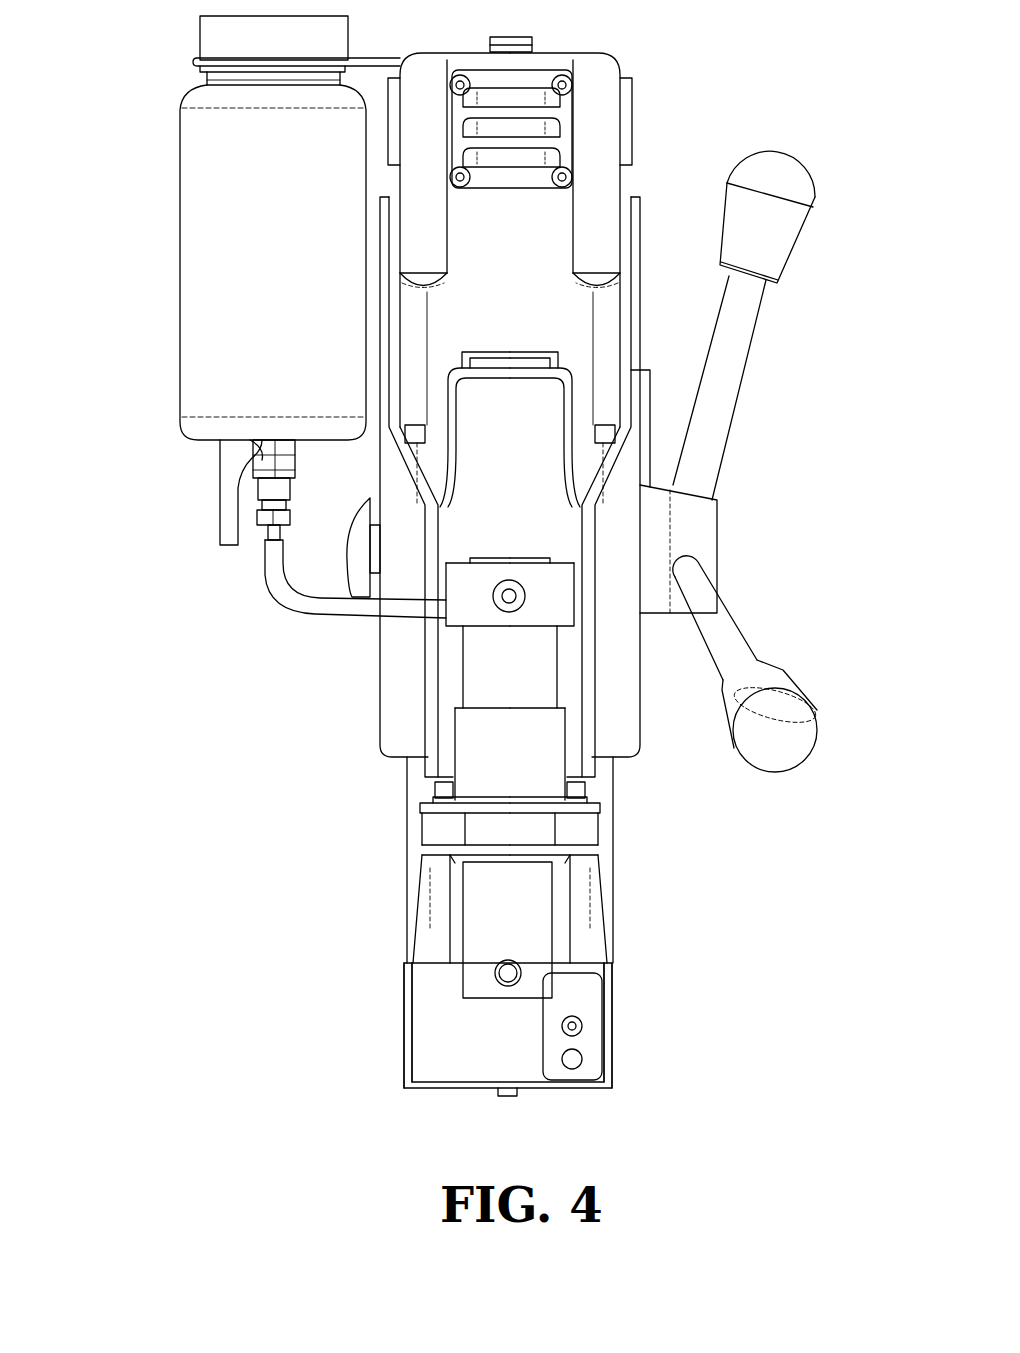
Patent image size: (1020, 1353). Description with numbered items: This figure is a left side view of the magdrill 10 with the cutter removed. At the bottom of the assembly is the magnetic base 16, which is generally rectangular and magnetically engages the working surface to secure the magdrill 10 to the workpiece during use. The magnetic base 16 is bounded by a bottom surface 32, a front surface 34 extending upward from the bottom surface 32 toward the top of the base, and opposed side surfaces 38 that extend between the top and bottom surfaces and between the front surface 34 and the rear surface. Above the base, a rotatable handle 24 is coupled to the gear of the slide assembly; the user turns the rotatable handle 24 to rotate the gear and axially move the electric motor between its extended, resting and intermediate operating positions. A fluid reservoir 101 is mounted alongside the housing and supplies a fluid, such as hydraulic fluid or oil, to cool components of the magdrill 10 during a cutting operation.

The magdrill 10 is at (326, 703).
The magnetic base 16 is at (448, 1068).
The rotatable handle 24 is at (787, 243).
The bottom surface 32 is at (565, 1090).
The front surface 34 is at (504, 1054).
The opposed side surfaces 38 is at (403, 1053).
The fluid reservoir 101 is at (210, 263).